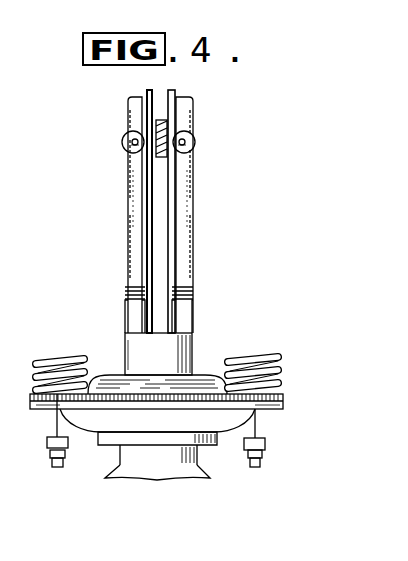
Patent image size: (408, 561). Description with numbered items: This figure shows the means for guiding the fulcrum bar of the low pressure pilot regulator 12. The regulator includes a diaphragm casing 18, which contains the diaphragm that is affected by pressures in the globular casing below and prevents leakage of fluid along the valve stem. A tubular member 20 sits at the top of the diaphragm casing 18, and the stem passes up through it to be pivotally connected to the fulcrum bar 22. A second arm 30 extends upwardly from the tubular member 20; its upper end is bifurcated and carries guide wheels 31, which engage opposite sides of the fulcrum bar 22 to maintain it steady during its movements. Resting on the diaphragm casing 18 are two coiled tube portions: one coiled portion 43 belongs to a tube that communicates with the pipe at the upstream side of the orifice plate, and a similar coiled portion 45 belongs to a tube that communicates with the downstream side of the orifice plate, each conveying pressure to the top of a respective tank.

The low pressure pilot regulator 12 is at (150, 478).
The diaphragm casing 18 is at (283, 397).
The tubular member 20 is at (177, 353).
The fulcrum bar 22 is at (163, 112).
The second arm 30 is at (138, 226).
The guide wheels 31 is at (121, 138).
The coiled portion 43 is at (63, 358).
The coiled portion 45 is at (268, 370).